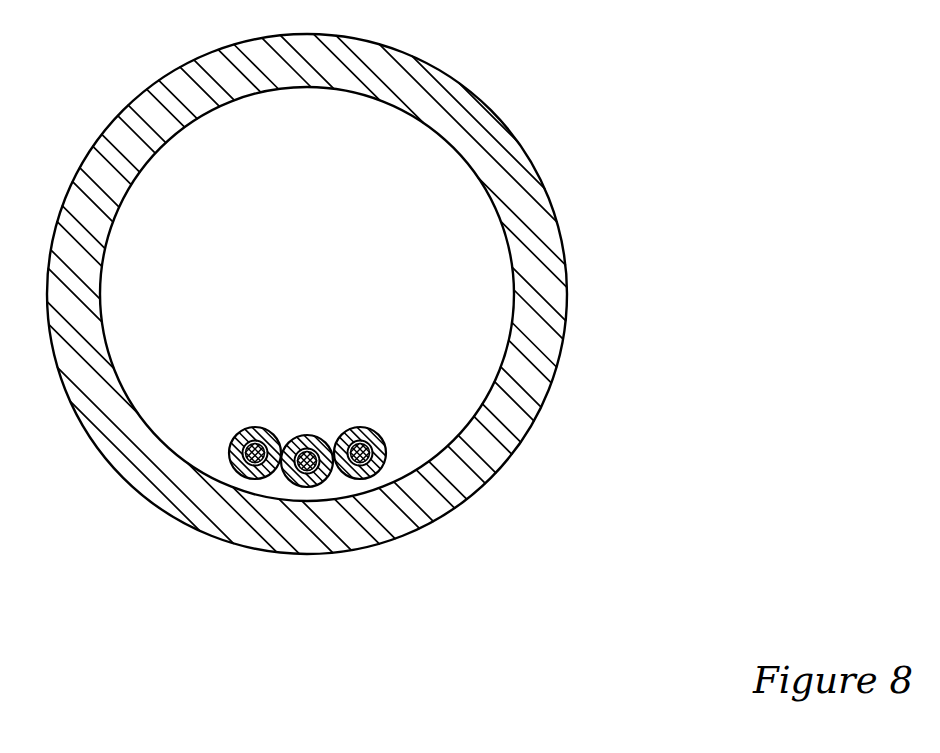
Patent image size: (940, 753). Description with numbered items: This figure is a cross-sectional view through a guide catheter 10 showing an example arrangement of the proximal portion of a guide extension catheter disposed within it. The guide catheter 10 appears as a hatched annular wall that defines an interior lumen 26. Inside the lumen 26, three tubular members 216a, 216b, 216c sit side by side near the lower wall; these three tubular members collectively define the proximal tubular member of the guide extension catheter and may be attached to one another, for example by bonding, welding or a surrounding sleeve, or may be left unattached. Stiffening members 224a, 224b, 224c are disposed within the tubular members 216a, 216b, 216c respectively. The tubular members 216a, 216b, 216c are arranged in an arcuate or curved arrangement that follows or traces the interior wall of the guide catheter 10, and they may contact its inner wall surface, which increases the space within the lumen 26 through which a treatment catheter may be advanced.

The guide catheter 10 is at (470, 128).
The lumen 26 is at (193, 157).
The tubular member 216a is at (248, 433).
The tubular member 216b is at (308, 435).
The tubular member 216c is at (358, 433).
The stiffening member 224a is at (253, 468).
The stiffening member 224b is at (310, 470).
The stiffening member 224c is at (363, 468).